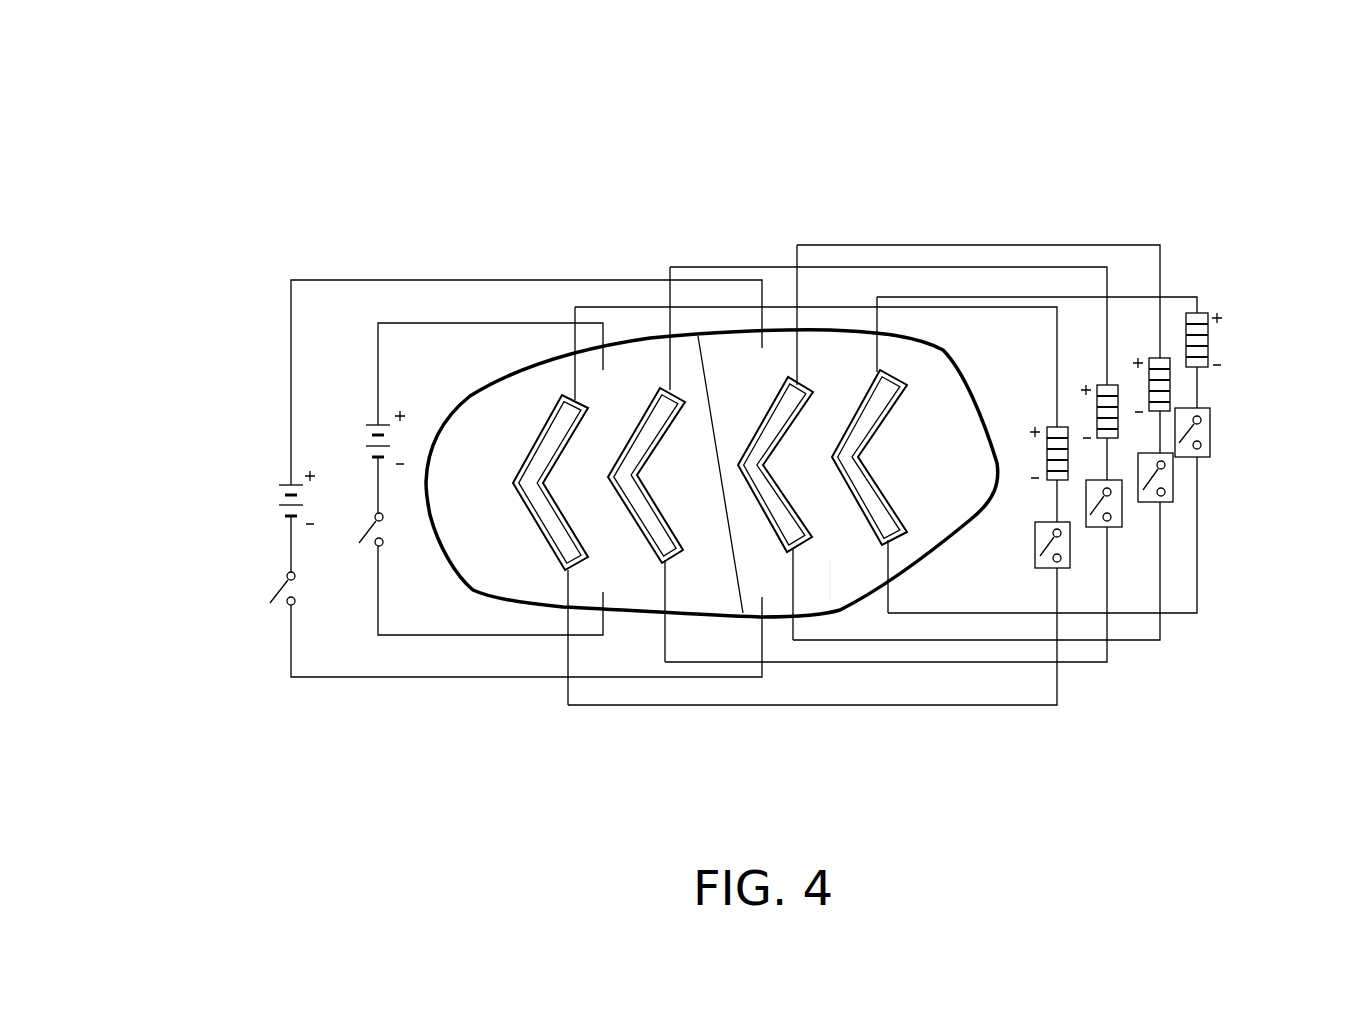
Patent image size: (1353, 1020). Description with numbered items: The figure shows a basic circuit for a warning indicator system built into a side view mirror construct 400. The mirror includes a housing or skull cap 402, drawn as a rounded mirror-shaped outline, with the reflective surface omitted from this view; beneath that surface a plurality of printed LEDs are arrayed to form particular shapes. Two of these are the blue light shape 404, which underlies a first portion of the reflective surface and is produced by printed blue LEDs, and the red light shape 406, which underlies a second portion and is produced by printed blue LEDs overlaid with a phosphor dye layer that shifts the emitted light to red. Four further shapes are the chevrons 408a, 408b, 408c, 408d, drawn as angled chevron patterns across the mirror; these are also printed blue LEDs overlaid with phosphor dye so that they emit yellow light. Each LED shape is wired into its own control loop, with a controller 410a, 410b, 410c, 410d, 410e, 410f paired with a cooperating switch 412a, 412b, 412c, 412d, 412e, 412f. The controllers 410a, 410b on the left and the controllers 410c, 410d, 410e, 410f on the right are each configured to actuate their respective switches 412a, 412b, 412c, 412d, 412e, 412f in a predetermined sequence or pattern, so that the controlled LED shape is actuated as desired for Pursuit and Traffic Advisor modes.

The side view mirror construct 400 is at (962, 130).
The housing or skull cap 402 is at (497, 602).
The blue light shape 404 is at (698, 594).
The red light shape 406 is at (841, 592).
The chevron shape 408a is at (563, 394).
The chevron shape 408b is at (662, 388).
The chevron shape 408c is at (789, 377).
The chevron shape 408d is at (881, 372).
The controller 410a is at (280, 494).
The controller 410b is at (366, 436).
The controller 410c is at (1060, 427).
The controller 410d is at (1110, 385).
The controller 410e is at (1160, 358).
The controller 410f is at (1210, 340).
The switch 412a is at (282, 584).
The switch 412b is at (357, 531).
The switch 412c is at (1060, 570).
The switch 412d is at (1109, 528).
The switch 412e is at (1165, 503).
The switch 412f is at (1210, 432).